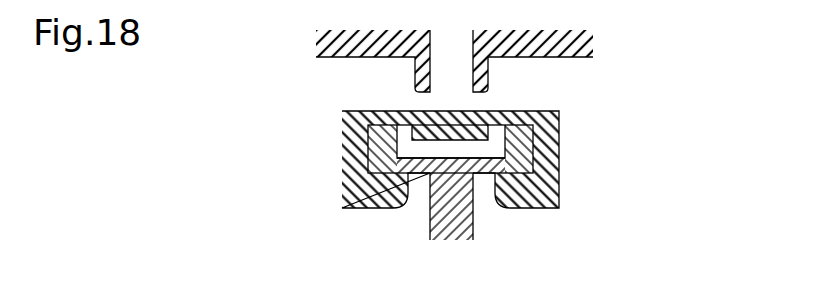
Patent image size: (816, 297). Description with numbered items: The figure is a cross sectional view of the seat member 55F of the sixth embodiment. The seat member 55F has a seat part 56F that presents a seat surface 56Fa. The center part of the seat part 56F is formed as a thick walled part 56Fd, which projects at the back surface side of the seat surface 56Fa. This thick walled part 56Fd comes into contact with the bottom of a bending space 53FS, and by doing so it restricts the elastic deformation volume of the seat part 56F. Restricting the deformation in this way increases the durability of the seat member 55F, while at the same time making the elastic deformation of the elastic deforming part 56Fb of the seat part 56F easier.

The seat member 55F is at (559, 190).
The seat part 56F is at (687, 77).
The seat surface 56Fa is at (473, 110).
The elastic deforming part 56Fb is at (487, 111).
The thick walled part 56Fd is at (457, 137).
The bending space 53FS is at (438, 155).